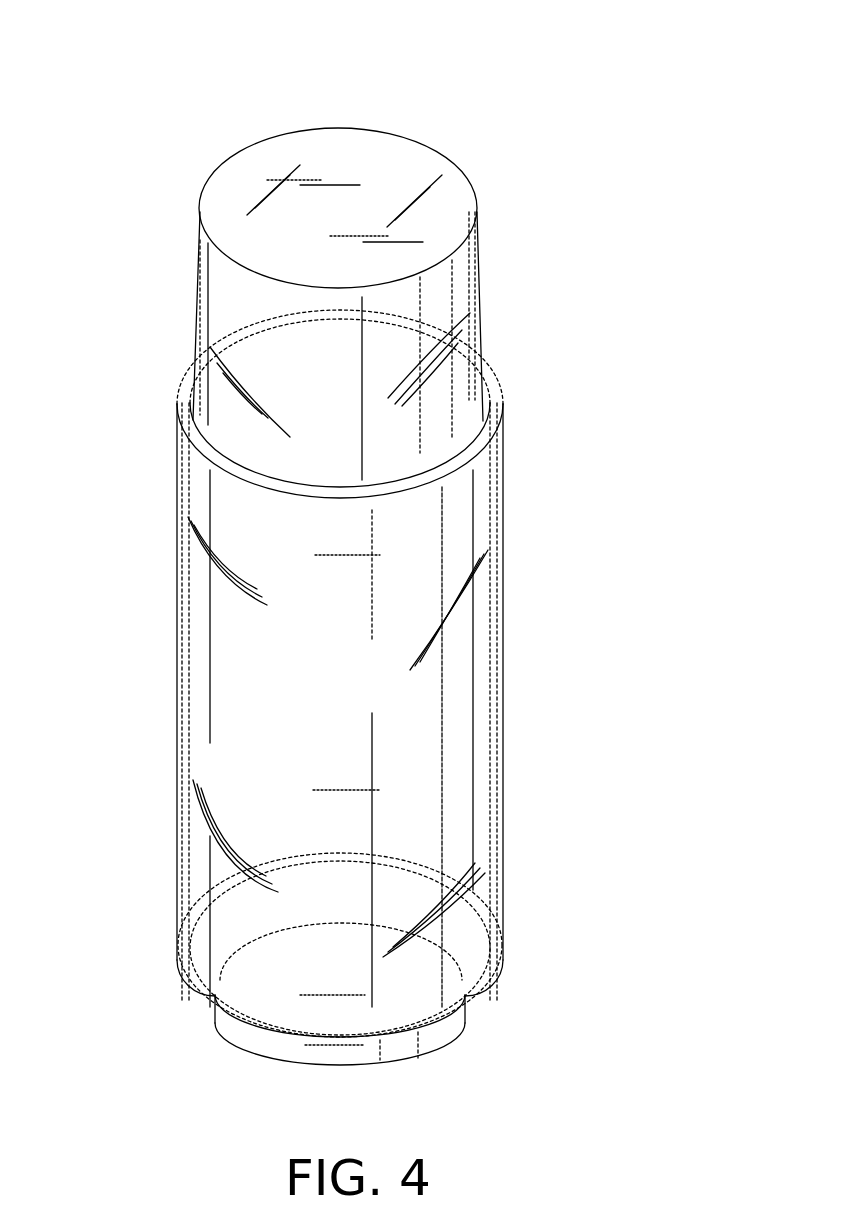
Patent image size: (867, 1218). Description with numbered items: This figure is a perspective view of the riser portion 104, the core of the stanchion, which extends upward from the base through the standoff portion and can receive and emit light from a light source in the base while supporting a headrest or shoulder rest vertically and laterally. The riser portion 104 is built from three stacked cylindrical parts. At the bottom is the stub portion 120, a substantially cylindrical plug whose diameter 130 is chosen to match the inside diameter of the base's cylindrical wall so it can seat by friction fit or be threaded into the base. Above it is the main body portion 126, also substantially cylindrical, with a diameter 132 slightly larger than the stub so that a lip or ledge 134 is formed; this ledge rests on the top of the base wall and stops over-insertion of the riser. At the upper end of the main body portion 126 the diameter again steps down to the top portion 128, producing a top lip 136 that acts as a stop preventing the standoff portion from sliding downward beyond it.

The riser portion 104 is at (421, 561).
The stub portion 120 is at (450, 1020).
The main body portion 126 is at (483, 718).
The top portion 128 is at (472, 313).
The diameter 130 is at (459, 1027).
The diameter 132 is at (110, 646).
The lip or ledge 134 is at (192, 985).
The top lip 136 is at (483, 420).